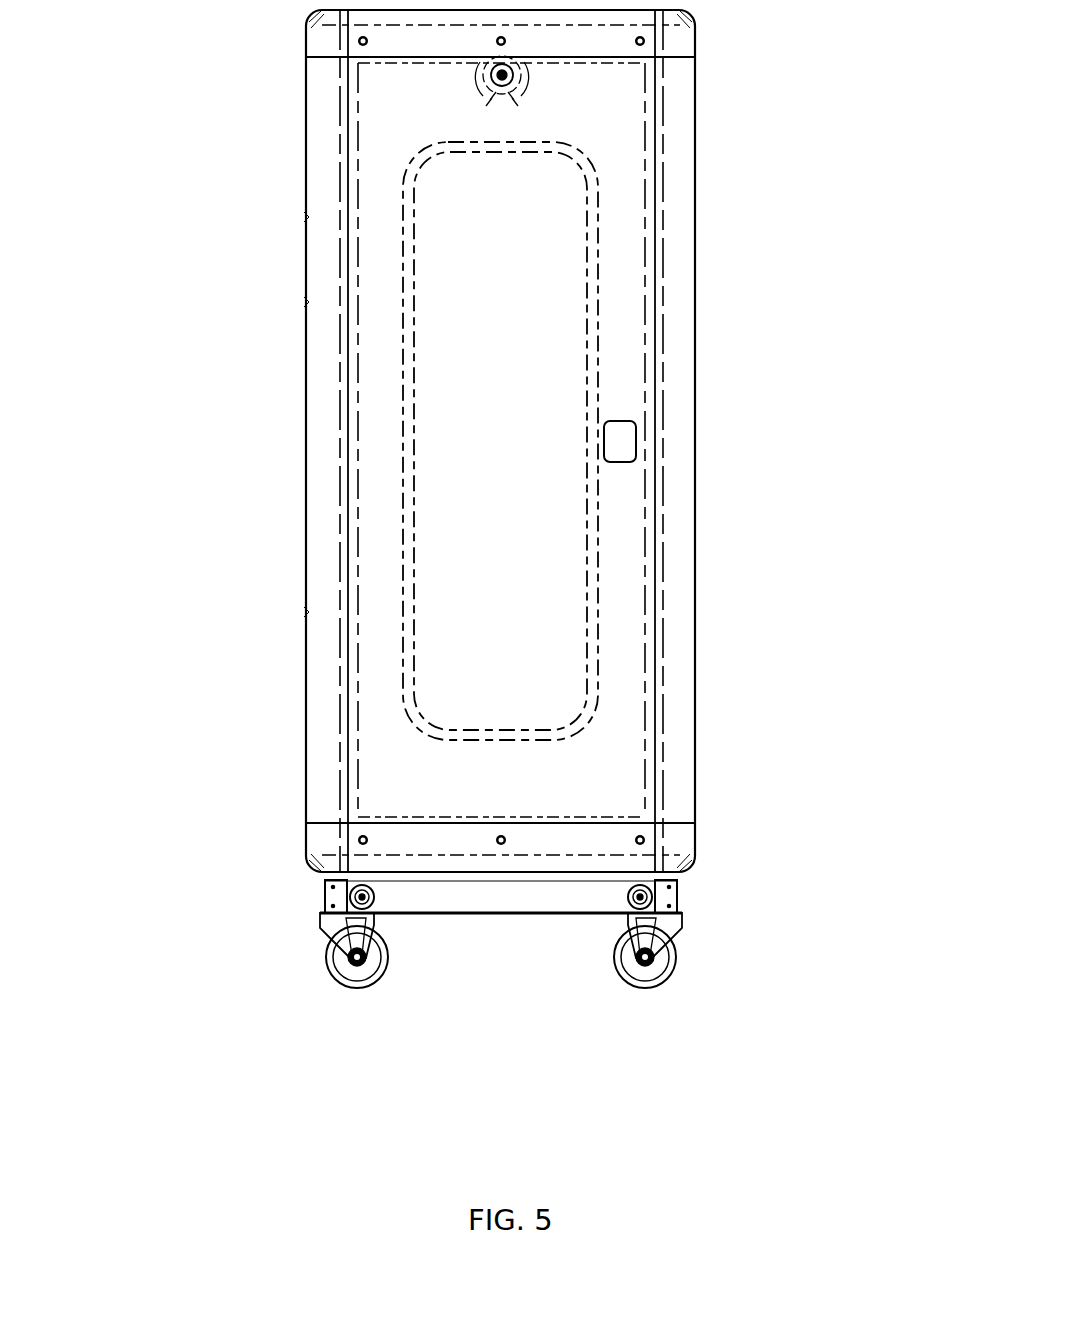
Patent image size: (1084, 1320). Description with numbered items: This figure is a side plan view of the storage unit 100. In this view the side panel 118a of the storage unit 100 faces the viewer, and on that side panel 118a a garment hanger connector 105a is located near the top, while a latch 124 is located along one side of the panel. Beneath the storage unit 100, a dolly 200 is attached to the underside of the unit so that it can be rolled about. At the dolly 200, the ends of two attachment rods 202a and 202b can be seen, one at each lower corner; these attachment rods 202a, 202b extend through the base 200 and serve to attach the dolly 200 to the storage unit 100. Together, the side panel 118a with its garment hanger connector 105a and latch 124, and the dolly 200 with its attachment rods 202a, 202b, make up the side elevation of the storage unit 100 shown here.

The storage unit 100 is at (176, 97).
The garment hanger connector 105a is at (502, 75).
The side panel 118a is at (500, 441).
The latch 124 is at (623, 445).
The dolly 200 is at (487, 909).
The attachment rod 202a is at (640, 897).
The attachment rod 202b is at (360, 897).